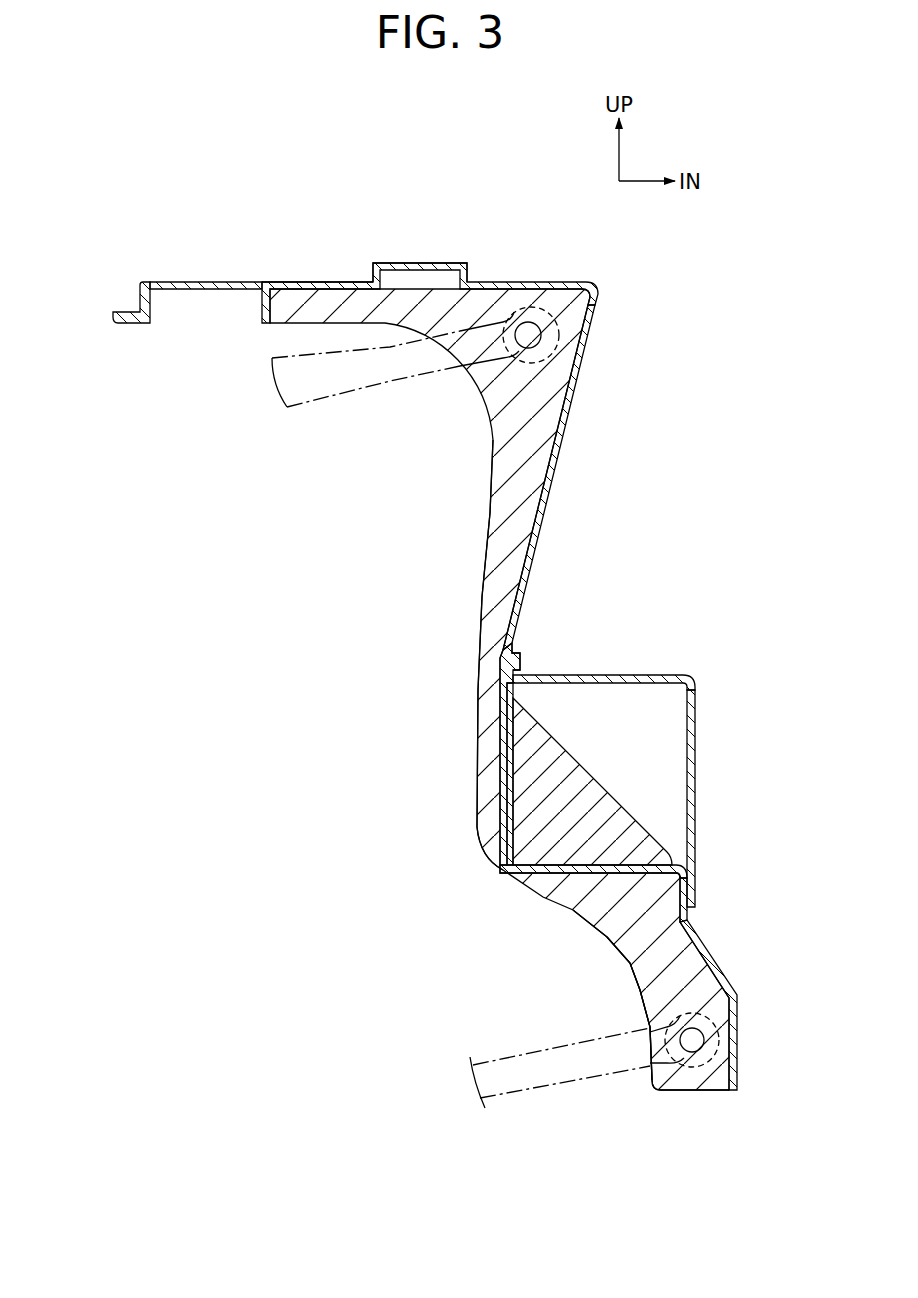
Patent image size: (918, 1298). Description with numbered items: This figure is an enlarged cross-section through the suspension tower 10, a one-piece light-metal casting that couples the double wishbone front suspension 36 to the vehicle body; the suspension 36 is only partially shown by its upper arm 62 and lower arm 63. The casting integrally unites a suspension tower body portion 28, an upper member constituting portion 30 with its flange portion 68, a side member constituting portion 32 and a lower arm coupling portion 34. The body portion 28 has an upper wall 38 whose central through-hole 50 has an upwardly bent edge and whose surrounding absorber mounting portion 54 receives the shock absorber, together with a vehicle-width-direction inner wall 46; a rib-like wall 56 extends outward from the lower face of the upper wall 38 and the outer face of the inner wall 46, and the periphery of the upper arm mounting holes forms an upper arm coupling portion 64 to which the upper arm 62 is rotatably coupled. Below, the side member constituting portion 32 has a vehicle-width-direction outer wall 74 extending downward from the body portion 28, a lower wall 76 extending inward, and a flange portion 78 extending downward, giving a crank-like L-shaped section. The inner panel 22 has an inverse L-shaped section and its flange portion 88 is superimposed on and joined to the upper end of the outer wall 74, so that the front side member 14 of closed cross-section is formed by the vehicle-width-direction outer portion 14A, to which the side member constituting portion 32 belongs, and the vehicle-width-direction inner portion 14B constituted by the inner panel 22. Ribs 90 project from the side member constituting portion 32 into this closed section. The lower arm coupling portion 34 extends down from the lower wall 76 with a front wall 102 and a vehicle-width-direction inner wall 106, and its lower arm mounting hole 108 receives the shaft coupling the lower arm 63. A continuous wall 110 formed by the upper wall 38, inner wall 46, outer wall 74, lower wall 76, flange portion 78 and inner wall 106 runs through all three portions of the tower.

The suspension tower 10 is at (712, 373).
The front side member 14 is at (713, 700).
The vehicle-width-direction outer portion 14A is at (500, 827).
The vehicle-width-direction inner portion 14B is at (697, 753).
The inner panel 22 is at (640, 675).
The suspension tower body portion 28 is at (588, 427).
The upper member constituting portion 30 is at (196, 272).
The side member constituting portion 32 is at (458, 777).
The lower arm coupling portion 34 is at (748, 1008).
The front suspension 36 is at (461, 719).
The upper wall 38 is at (494, 280).
The vehicle-width-direction inner wall 46 is at (555, 478).
The through-hole 50 is at (460, 272).
The absorber mounting portion 54 is at (350, 278).
The rib-like wall 56 is at (490, 489).
The upper arm 62 is at (360, 388).
The lower arm 63 is at (507, 1057).
The upper arm coupling portion 64 is at (563, 312).
The flange portion 68 is at (135, 313).
The vehicle-width-direction outer wall 74 is at (502, 716).
The lower wall 76 is at (555, 875).
The flange portion 78 is at (655, 895).
The flange portion 88 is at (520, 668).
The rib 90 is at (592, 782).
The front wall 102 is at (637, 983).
The vehicle-width-direction inner wall 106 is at (722, 970).
The lower arm mounting hole 108 is at (693, 1048).
The continuous wall 110 is at (541, 646).